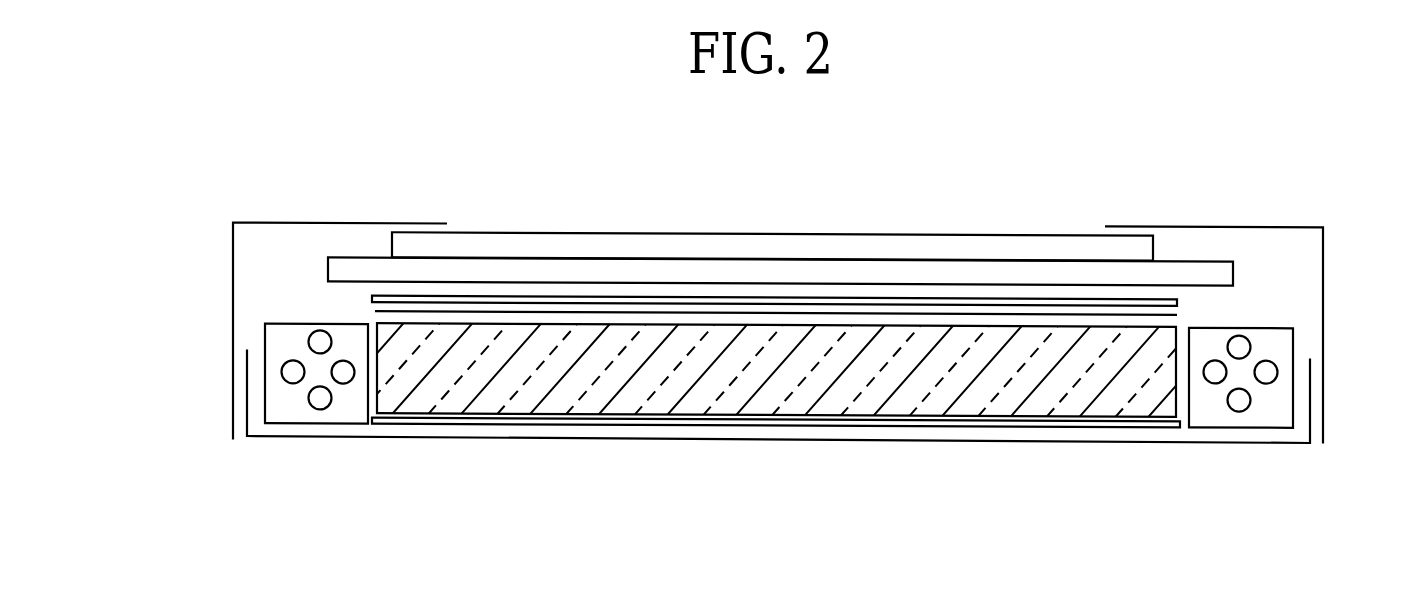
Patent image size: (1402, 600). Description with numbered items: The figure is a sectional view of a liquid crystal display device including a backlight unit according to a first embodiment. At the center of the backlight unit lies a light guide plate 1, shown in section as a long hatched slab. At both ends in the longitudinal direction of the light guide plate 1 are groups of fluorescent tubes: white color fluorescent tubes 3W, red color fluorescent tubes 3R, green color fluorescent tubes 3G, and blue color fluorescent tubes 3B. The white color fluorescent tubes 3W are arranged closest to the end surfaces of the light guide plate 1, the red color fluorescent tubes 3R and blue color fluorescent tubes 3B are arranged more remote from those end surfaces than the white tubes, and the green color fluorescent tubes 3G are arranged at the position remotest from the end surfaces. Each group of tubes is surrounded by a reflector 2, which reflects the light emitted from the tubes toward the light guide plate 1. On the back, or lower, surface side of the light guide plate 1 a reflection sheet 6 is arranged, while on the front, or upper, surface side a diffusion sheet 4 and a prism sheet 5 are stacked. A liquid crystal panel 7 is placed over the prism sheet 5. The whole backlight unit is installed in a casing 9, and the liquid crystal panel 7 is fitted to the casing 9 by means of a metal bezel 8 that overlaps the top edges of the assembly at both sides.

The light guide plate 1 is at (937, 374).
The reflector 2 is at (275, 427).
The blue color fluorescent tube 3B is at (313, 334).
The green color fluorescent tube 3G is at (284, 383).
The red color fluorescent tube 3R is at (323, 409).
The white color fluorescent tube 3W is at (352, 379).
The diffusion sheet 4 is at (663, 313).
The prism sheet 5 is at (818, 298).
The reflection sheet 6 is at (1012, 429).
The liquid crystal panel 7 is at (975, 247).
The metal bezel 8 is at (312, 226).
The casing 9 is at (722, 441).